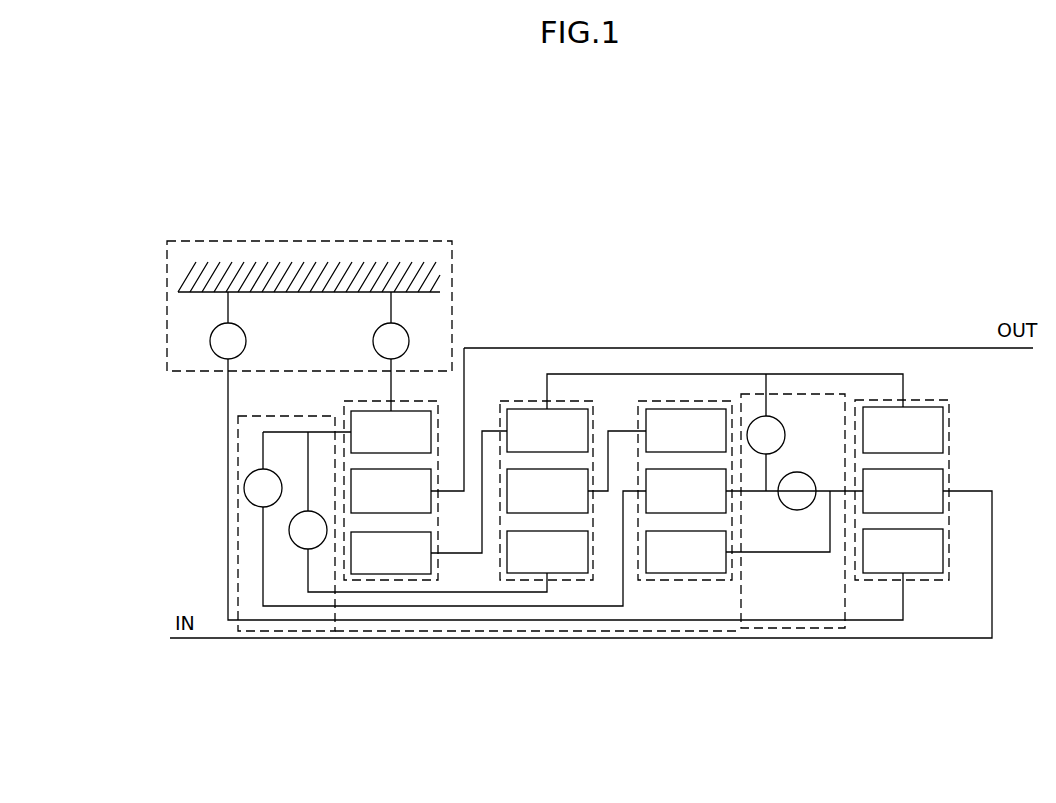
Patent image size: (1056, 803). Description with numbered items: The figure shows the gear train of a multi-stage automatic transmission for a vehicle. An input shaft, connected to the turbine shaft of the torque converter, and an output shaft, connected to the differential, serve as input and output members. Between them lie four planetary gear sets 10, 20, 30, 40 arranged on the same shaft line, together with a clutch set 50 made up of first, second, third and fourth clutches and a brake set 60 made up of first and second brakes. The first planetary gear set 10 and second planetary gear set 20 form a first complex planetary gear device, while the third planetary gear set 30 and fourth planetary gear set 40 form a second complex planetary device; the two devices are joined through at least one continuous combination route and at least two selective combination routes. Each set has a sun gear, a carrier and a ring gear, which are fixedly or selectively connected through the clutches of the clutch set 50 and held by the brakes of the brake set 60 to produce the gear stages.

The first planetary gear set 10 is at (393, 583).
The second planetary gear set 20 is at (563, 583).
The third planetary gear set 30 is at (699, 583).
The fourth planetary gear set 40 is at (918, 582).
The clutch set 50 is at (797, 628).
The brake set 60 is at (307, 240).